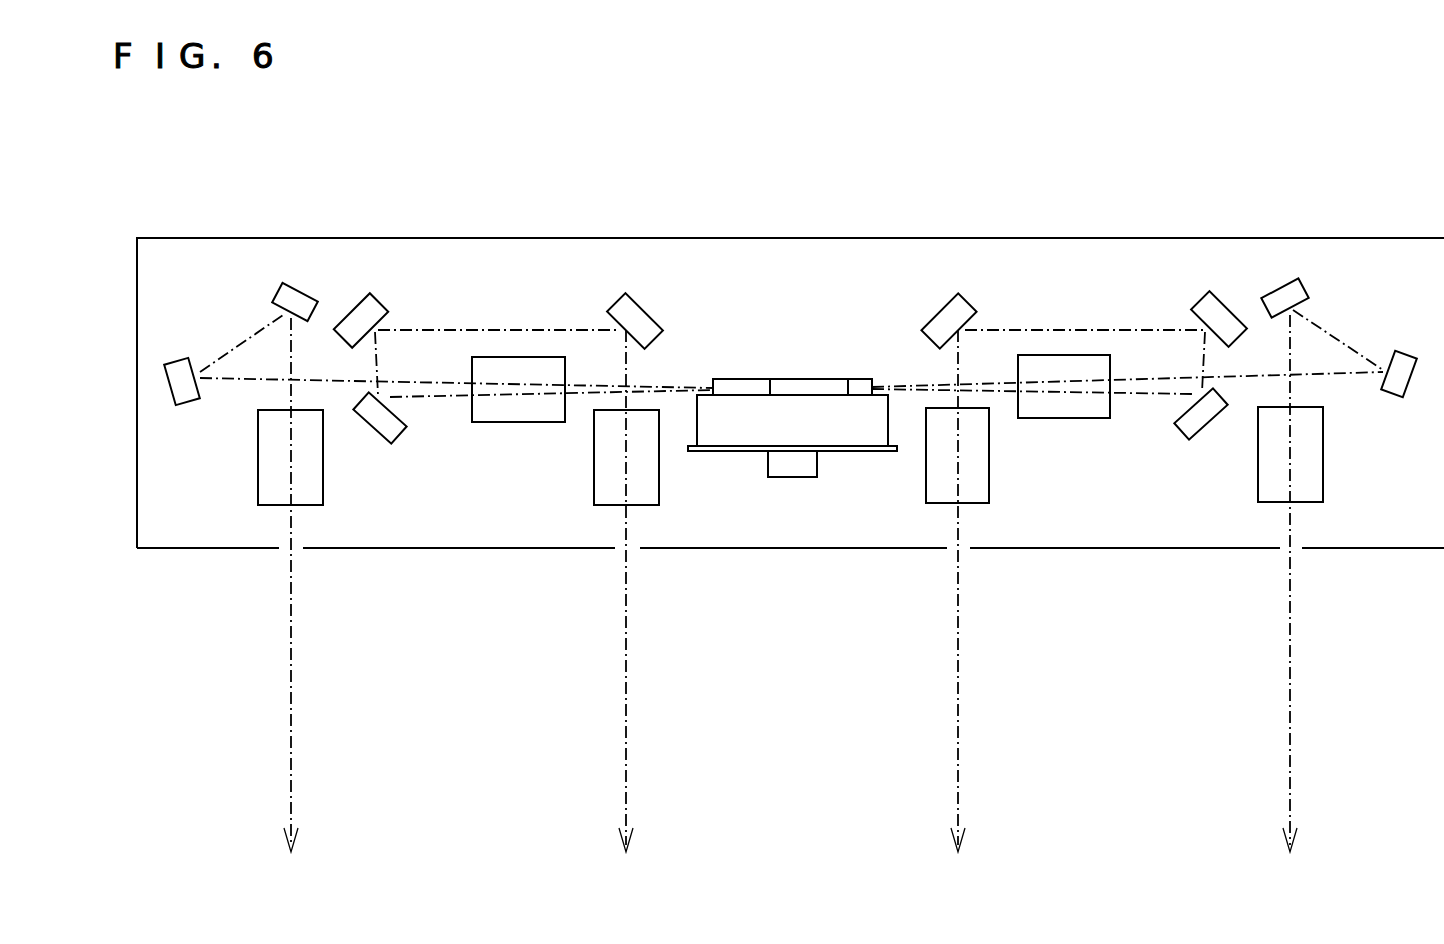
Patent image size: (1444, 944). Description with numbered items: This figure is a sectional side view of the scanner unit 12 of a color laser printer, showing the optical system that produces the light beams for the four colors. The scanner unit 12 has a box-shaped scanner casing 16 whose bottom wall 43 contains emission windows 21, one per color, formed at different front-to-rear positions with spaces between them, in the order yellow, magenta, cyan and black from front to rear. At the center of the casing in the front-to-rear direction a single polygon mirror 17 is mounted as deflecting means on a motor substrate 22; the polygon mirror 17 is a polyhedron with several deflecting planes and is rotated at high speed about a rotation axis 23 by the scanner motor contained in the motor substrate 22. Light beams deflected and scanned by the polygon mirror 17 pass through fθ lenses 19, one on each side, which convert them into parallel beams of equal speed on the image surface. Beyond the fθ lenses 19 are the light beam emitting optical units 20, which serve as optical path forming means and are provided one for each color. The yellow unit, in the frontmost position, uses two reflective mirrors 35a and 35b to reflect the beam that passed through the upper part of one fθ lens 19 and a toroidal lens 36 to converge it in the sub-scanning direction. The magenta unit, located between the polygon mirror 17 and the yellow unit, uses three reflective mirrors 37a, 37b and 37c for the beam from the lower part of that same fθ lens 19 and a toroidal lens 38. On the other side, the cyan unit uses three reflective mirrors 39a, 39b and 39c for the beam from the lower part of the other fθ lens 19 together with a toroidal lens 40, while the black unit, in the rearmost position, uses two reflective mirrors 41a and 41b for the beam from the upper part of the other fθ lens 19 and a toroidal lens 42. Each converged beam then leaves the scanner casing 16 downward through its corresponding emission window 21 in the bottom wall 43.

The scanner unit 12 is at (685, 228).
The scanner casing 16 is at (160, 238).
The polygon mirror 17 is at (837, 387).
The fθ lens 19 is at (515, 413).
The light beam emitting optical unit 20 is at (262, 270).
The emission window 21 is at (303, 549).
The motor substrate 22 is at (728, 438).
The rotation axis 23 is at (777, 467).
The reflective mirror 35a is at (1397, 388).
The reflective mirror 35b is at (1293, 293).
The toroidal lens 36 is at (1315, 483).
The reflective mirror 37a is at (1183, 425).
The reflective mirror 37b is at (1210, 303).
The reflective mirror 37c is at (960, 310).
The toroidal lens 38 is at (978, 490).
The reflective mirror 39a is at (378, 422).
The reflective mirror 39b is at (372, 312).
The reflective mirror 39c is at (635, 315).
The toroidal lens 40 is at (605, 491).
The reflective mirror 41a is at (190, 396).
The reflective mirror 41b is at (300, 302).
The toroidal lens 42 is at (266, 474).
The bottom wall 43 is at (1123, 549).